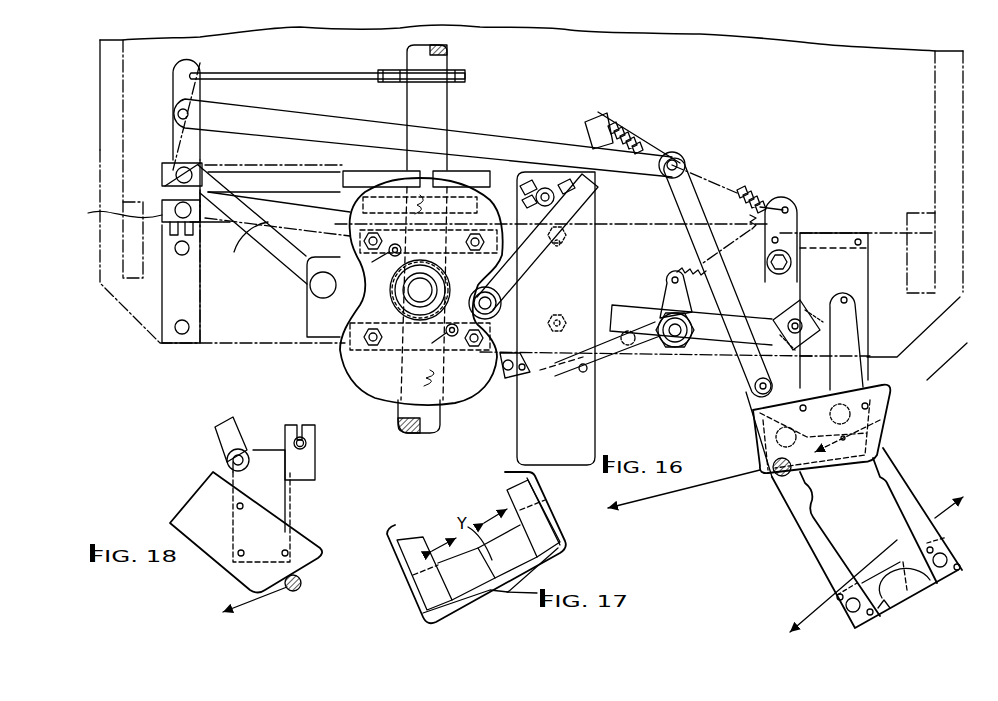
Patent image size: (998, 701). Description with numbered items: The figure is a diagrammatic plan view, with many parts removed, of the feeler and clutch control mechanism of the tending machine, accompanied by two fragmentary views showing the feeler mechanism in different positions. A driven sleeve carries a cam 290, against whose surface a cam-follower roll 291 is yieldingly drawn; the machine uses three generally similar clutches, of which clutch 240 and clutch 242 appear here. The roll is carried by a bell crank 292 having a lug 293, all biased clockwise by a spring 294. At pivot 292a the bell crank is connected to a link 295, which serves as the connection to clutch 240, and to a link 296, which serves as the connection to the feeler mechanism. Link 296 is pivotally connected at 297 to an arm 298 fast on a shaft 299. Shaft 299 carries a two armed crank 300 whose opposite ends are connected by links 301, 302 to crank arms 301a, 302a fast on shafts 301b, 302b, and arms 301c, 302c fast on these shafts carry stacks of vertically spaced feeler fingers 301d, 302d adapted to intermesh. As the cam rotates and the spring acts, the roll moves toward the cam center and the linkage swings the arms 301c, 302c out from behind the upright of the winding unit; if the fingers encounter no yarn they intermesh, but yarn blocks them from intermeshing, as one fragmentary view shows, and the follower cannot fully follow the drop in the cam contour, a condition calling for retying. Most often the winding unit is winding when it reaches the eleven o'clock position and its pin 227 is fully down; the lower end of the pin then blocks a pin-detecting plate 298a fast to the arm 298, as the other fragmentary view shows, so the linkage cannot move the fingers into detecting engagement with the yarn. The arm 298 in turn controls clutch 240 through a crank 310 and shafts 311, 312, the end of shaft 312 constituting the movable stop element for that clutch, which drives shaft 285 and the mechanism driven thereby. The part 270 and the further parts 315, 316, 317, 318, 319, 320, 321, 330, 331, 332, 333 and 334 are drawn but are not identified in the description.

In FIG. 16, the pin 227 is at (776, 476).
In FIG. 18, the pin 227 is at (302, 585).
In FIG. 16, the clutch 240 is at (392, 165).
In FIG. 16, the clutch 242 is at (333, 358).
In FIG. 16, the mounting bracket 270 is at (315, 327).
In FIG. 16, the shaft 285 is at (397, 413).
In FIG. 16, the cam 290 is at (353, 367).
In FIG. 16, the cam-follower roll 291 is at (503, 313).
In FIG. 16, the bell crank 292 is at (588, 193).
In FIG. 16, the pivotal connection 292a is at (675, 160).
In FIG. 16, the lug 293 is at (584, 123).
In FIG. 16, the spring 294 is at (625, 120).
In FIG. 16, the link 295 is at (483, 140).
In FIG. 16, the link 296 is at (672, 199).
In FIG. 18, the link 296 is at (220, 425).
In FIG. 16, the pivotal connection 297 is at (753, 387).
In FIG. 16, the arm 298 is at (750, 427).
In FIG. 18, the arm 298 is at (253, 450).
In FIG. 16, the pin-detecting plate 298a is at (880, 442).
In FIG. 18, the pin-detecting plate 298a is at (305, 553).
In FIG. 16, the shaft 299 is at (803, 312).
In FIG. 18, the shaft 299 is at (306, 445).
In FIG. 16, the two armed crank 300 is at (822, 302).
In FIG. 16, the link 301 is at (840, 332).
In FIG. 16, the crank arm 301a is at (866, 375).
In FIG. 16, the shaft 301b is at (892, 413).
In FIG. 16, the arm 301c is at (903, 478).
In FIG. 17, the arm 301c is at (510, 495).
In FIG. 16, the feeler fingers 301d is at (921, 578).
In FIG. 17, the feeler fingers 301d is at (498, 558).
In FIG. 16, the link 302 is at (747, 404).
In FIG. 16, the crank arm 302a is at (762, 466).
In FIG. 16, the shaft 302b is at (758, 448).
In FIG. 16, the arm 302c is at (817, 543).
In FIG. 17, the arm 302c is at (418, 533).
In FIG. 16, the feeler fingers 302d is at (883, 613).
In FIG. 17, the feeler fingers 302d is at (452, 584).
In FIG. 16, the crank 310 is at (182, 137).
In FIG. 16, the shaft 311 is at (165, 172).
In FIG. 16, the shaft 312 is at (223, 165).
In FIG. 16, the bar 315 is at (617, 309).
In FIG. 16, the bar 316 is at (646, 350).
In FIG. 16, the bar 317 is at (622, 348).
In FIG. 16, the lever arm 318 is at (673, 330).
In FIG. 16, the spring 319 is at (757, 228).
In FIG. 16, the spring 320 is at (662, 279).
In FIG. 16, the bracket 321 is at (505, 380).
In FIG. 16, the pipe 330 is at (455, 63).
In FIG. 16, the arm 331 is at (265, 73).
In FIG. 16, the arm end 332 is at (182, 90).
In FIG. 16, the line 333 is at (88, 215).
In FIG. 16, the arc path 334 is at (234, 251).